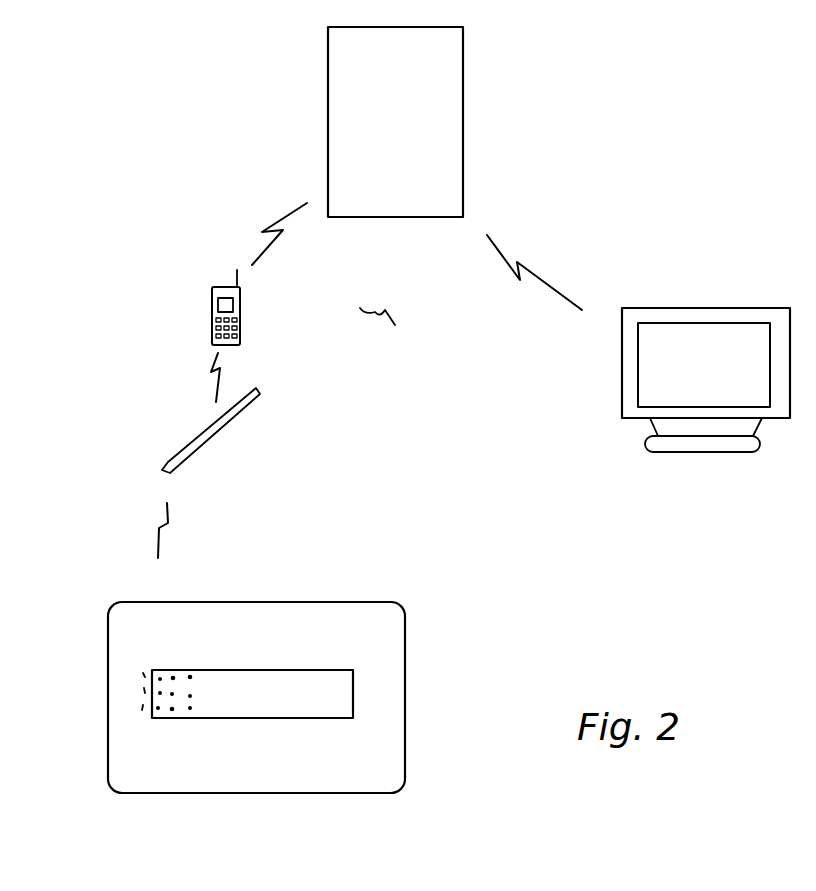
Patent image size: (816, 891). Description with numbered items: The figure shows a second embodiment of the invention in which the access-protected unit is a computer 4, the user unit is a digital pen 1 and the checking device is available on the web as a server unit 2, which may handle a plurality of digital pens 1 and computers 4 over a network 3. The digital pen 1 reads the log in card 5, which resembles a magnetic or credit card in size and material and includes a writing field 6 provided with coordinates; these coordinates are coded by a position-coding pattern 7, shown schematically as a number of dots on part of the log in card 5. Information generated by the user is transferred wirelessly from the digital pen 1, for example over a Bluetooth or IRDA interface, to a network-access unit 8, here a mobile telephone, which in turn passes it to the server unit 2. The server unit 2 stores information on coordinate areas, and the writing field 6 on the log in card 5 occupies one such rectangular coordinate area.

The digital pen 1 is at (223, 440).
The server unit 2 is at (470, 77).
The network 3 is at (495, 270).
The computer 4 is at (605, 422).
The log in card 5 is at (92, 688).
The writing field 6 is at (363, 690).
The position-coding pattern 7 is at (140, 698).
The network-access unit 8 is at (205, 298).